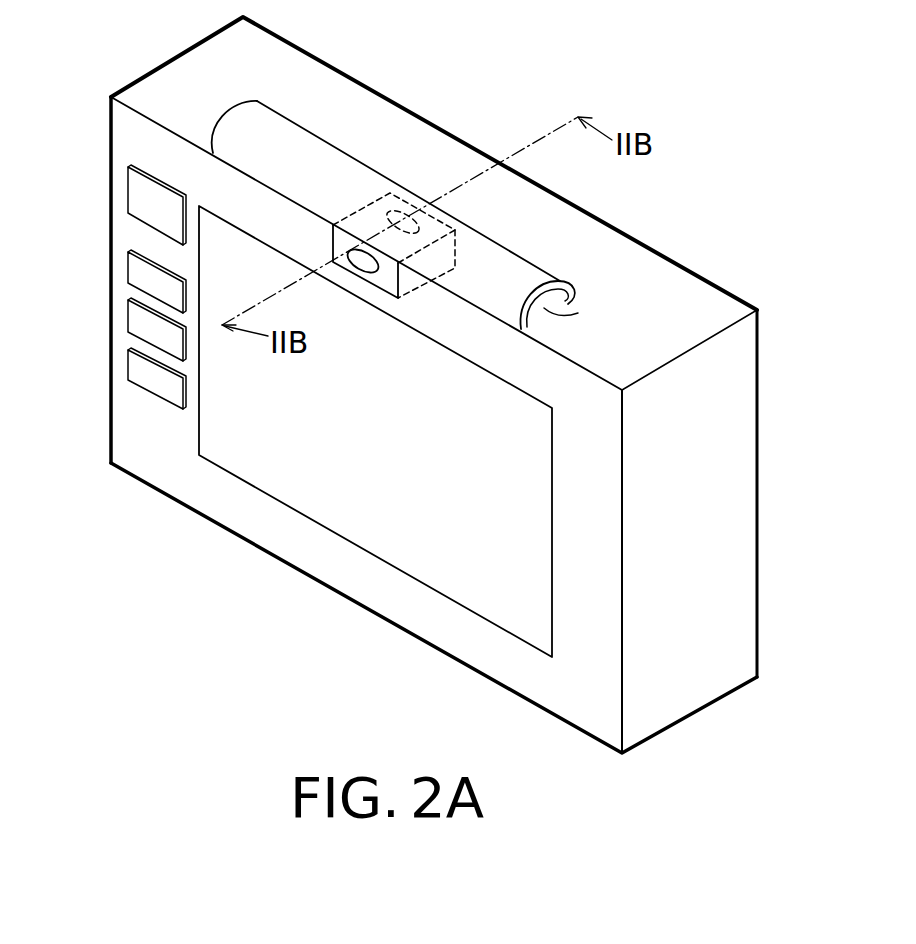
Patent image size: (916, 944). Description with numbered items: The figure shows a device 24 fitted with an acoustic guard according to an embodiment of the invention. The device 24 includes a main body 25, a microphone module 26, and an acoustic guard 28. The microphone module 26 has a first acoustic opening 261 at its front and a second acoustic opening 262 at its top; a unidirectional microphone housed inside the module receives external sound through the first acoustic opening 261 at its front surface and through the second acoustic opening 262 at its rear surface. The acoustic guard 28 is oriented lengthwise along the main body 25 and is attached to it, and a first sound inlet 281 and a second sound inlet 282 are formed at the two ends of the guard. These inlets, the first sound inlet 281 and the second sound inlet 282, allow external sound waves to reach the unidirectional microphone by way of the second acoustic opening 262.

The device 24 is at (762, 403).
The main body 25 is at (737, 532).
The microphone module 26 is at (343, 239).
The first acoustic opening 261 is at (361, 271).
The second acoustic opening 262 is at (398, 212).
The acoustic guard 28 is at (520, 277).
The first sound inlet 281 is at (577, 315).
The second sound inlet 282 is at (217, 131).